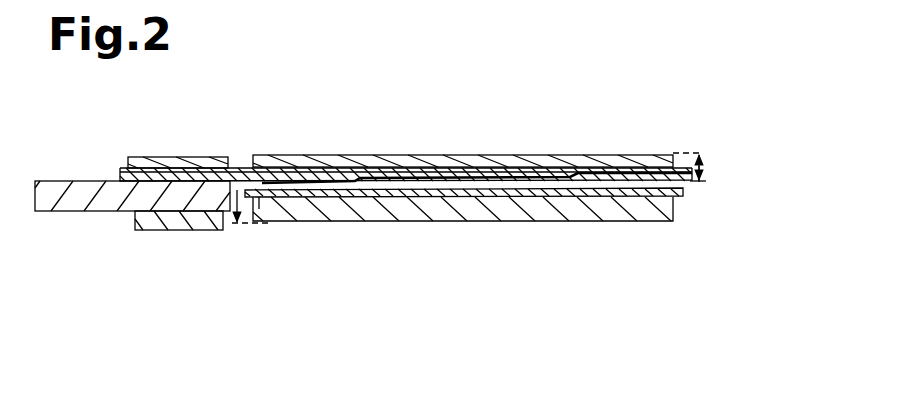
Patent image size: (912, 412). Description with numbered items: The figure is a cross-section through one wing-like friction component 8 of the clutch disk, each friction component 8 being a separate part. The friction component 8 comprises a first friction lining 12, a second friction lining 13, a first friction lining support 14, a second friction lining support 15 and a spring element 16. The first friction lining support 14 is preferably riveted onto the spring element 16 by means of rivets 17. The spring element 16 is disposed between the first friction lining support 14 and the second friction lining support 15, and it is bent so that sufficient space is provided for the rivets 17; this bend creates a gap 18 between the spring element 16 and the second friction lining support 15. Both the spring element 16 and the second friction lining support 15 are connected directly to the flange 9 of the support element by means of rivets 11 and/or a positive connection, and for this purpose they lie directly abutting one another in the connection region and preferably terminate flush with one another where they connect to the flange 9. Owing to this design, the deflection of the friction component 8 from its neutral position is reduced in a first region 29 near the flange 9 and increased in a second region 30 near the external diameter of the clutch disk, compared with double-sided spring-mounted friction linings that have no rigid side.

The friction component 8 is at (598, 140).
The flange 9 is at (88, 216).
The rivets 11 is at (166, 237).
The first friction lining 12 is at (320, 228).
The second friction lining 13 is at (288, 155).
The first friction lining support 14 is at (690, 193).
The second friction lining support 15 is at (704, 173).
The spring element 16 is at (261, 198).
The rivets 17 is at (400, 168).
The gap 18 is at (606, 167).
The first region 29 is at (240, 226).
The second region 30 is at (703, 137).